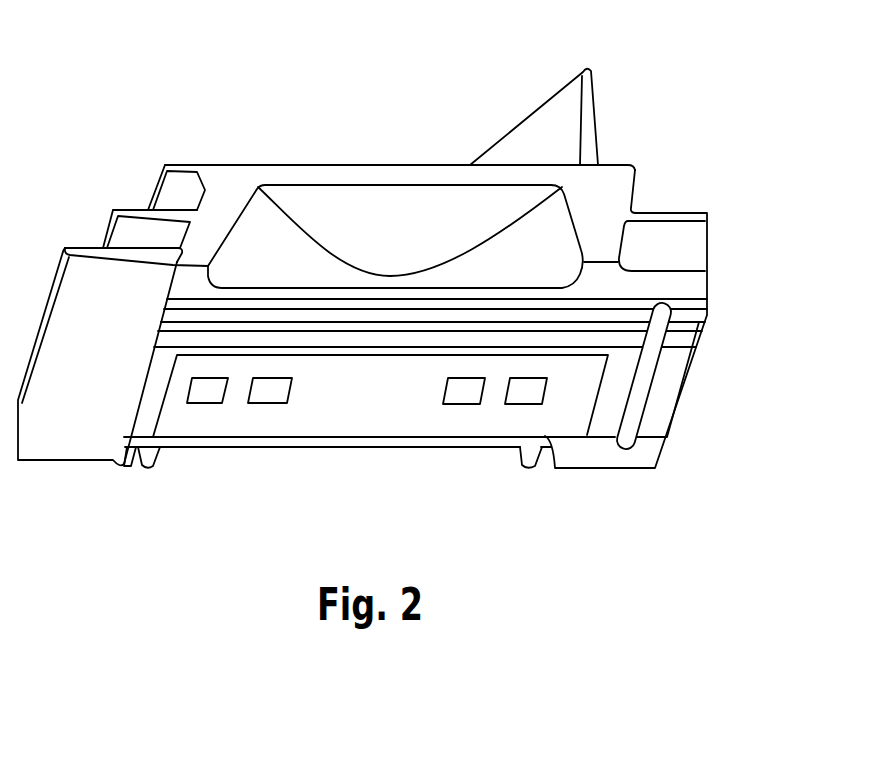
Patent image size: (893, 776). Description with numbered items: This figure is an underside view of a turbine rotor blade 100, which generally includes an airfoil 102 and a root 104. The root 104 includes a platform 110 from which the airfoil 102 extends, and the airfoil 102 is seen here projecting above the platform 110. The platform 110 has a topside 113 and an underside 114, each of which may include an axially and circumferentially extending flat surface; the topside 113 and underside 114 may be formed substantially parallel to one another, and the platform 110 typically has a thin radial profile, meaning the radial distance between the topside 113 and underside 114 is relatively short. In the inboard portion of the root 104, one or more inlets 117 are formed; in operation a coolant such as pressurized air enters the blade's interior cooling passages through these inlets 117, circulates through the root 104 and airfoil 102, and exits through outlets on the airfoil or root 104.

The turbine rotor blade 100 is at (155, 53).
The airfoil 102 is at (553, 117).
The root 104 is at (710, 347).
The platform 110 is at (185, 157).
The topside 113 is at (303, 165).
The underside 114 is at (420, 248).
The inlets 117 is at (205, 393).